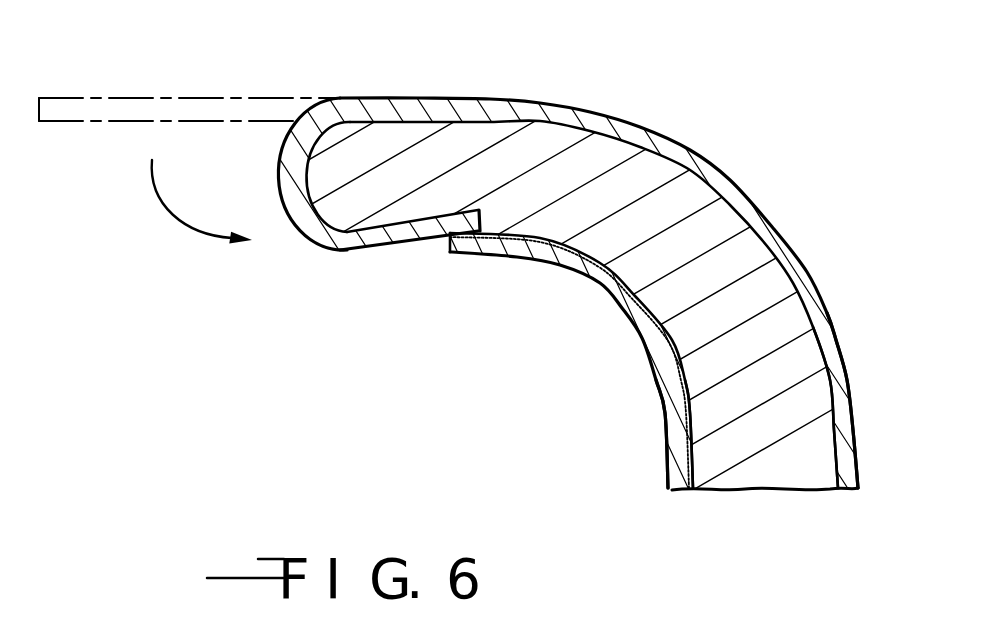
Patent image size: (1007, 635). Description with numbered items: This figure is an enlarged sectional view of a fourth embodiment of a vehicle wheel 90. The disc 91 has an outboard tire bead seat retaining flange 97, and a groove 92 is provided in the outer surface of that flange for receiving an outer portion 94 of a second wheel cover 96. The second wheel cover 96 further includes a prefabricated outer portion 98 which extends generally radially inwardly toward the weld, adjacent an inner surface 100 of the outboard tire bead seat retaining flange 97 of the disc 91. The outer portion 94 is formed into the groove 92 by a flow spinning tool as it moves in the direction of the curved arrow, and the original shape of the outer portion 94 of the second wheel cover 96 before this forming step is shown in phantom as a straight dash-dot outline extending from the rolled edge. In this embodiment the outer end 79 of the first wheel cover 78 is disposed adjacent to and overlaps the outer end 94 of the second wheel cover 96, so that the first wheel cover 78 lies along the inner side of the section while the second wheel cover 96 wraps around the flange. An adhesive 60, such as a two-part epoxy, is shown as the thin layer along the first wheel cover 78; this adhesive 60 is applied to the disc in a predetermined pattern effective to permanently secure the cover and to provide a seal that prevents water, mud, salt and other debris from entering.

The vehicle wheel 90 is at (750, 133).
The inner surface 100 is at (805, 268).
The prefabricated outer portion 98 is at (838, 380).
The outboard tire bead seat retaining flange 97 is at (730, 223).
The second wheel cover 96 is at (306, 250).
The outer portion 94 is at (87, 97).
The groove 92 is at (443, 232).
The outer end 79 is at (470, 250).
The first wheel cover 78 is at (650, 422).
The adhesive 60 is at (688, 490).
The disc 91 is at (795, 500).